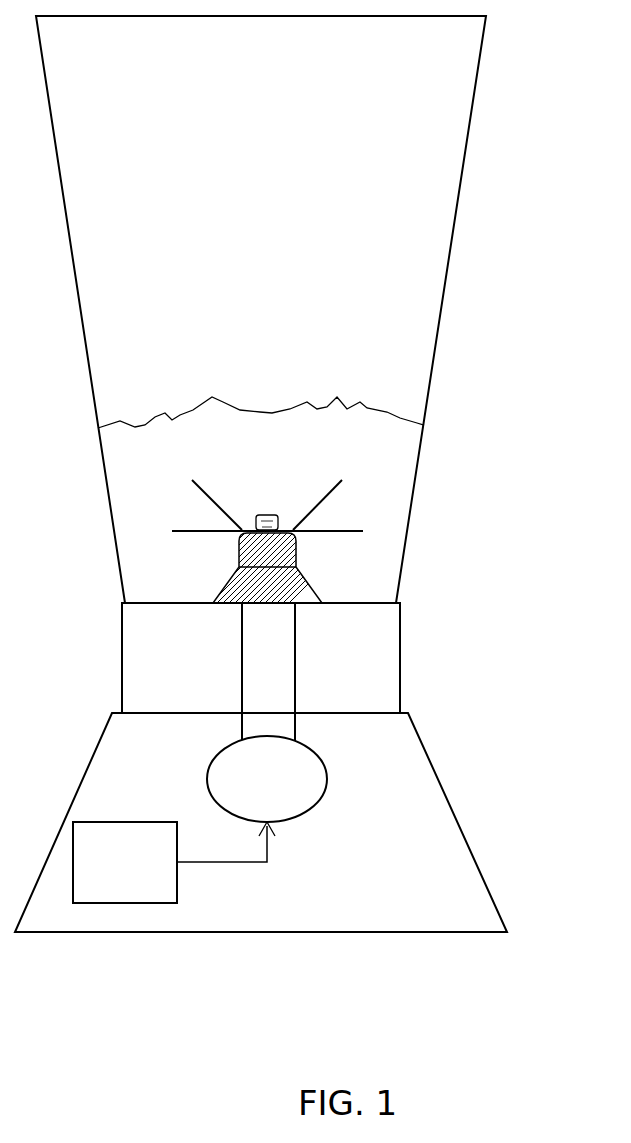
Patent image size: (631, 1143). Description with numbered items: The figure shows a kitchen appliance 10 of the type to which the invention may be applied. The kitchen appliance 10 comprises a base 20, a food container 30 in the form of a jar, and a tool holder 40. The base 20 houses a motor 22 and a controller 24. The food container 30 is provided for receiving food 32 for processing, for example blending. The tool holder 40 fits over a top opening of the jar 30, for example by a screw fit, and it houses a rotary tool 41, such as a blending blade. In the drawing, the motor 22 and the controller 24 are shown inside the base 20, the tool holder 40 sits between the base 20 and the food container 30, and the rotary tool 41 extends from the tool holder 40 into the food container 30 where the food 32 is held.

The kitchen appliance 10 is at (499, 164).
The base 20 is at (476, 860).
The motor 22 is at (328, 778).
The controller 24 is at (133, 822).
The food container 30 is at (433, 363).
The food 32 is at (272, 413).
The tool holder 40 is at (402, 653).
The rotary tool 41 is at (345, 571).